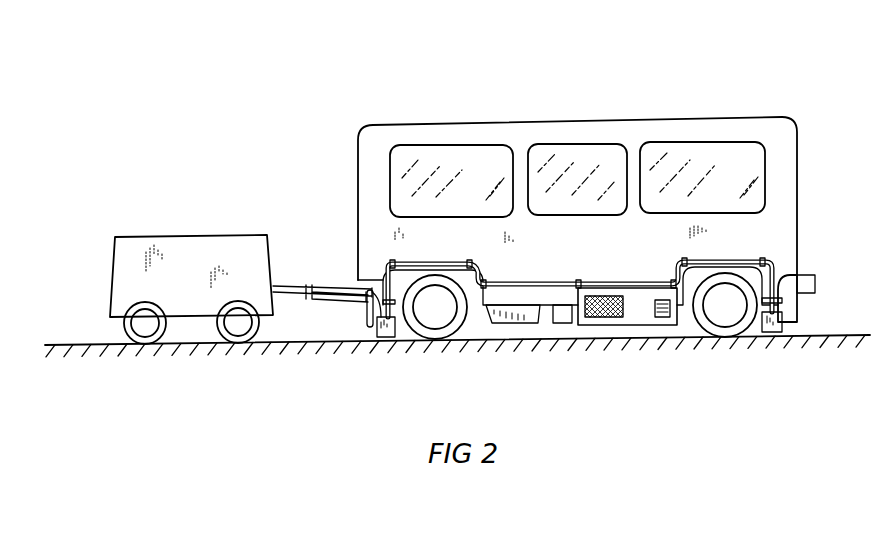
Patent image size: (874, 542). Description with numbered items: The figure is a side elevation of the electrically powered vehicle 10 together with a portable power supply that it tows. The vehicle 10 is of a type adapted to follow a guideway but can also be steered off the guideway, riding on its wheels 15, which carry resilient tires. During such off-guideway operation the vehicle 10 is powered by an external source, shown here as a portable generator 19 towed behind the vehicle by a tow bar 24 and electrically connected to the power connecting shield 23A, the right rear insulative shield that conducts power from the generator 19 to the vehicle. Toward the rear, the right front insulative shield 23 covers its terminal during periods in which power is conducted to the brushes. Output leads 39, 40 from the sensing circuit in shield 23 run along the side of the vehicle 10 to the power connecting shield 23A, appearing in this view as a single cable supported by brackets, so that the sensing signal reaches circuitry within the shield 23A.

The electrically powered vehicle 10 is at (805, 204).
The portable generator 19 is at (205, 236).
The tow bar 24 is at (297, 297).
The output lead 39 is at (542, 283).
The output lead 40 is at (582, 272).
The wheels 15 is at (455, 339).
The power connecting shield 23A is at (388, 338).
The right front insulative shield 23 is at (770, 333).